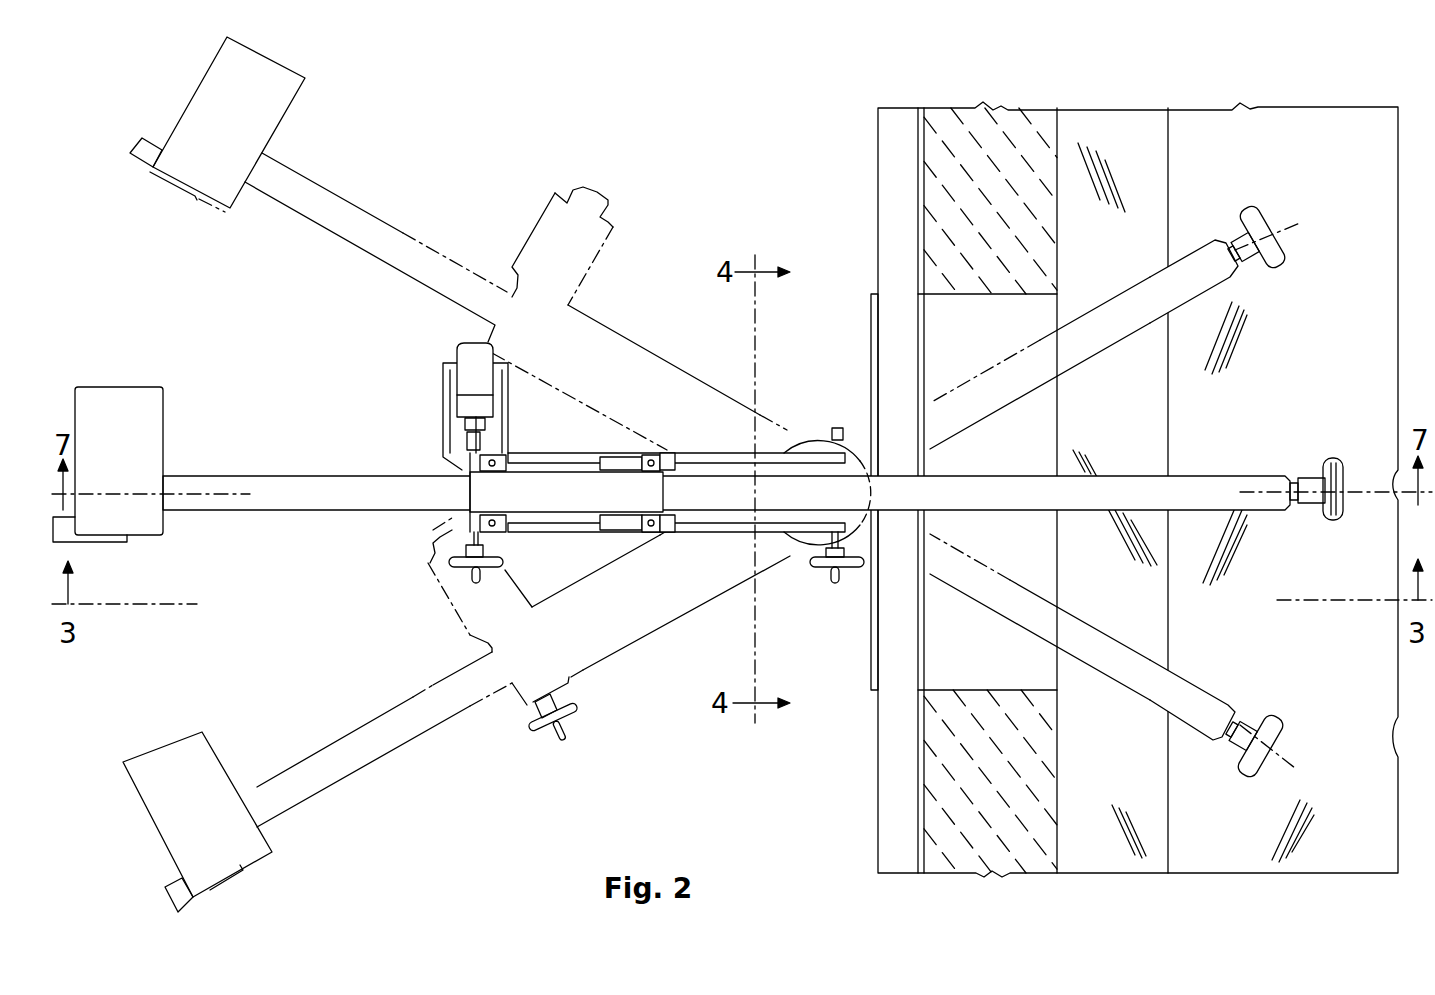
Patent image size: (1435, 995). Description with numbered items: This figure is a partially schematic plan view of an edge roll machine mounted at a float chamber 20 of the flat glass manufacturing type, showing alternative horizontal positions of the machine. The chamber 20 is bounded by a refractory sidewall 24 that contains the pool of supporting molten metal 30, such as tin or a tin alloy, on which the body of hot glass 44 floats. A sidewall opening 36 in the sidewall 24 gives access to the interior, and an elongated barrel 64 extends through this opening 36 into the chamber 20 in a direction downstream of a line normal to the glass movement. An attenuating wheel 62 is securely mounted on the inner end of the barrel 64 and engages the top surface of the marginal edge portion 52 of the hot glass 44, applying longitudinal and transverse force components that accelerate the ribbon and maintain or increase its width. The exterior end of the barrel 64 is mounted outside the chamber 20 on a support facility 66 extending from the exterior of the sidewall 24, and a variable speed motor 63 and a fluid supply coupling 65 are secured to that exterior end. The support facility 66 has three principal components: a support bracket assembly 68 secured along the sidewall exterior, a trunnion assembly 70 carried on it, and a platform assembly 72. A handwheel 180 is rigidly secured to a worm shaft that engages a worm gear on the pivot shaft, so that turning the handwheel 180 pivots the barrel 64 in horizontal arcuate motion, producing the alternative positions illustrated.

The float chamber 20 is at (863, 803).
The refractory sidewall 24 is at (928, 213).
The molten metal 30 is at (1092, 567).
The sidewall opening 36 is at (940, 342).
The body of hot glass 44 is at (1290, 339).
The marginal edge portion 52 is at (1166, 393).
The attenuating wheel 62 is at (1283, 238).
The variable speed motor 63 is at (297, 73).
The barrel 64 is at (1145, 279).
The fluid supply coupling 65 is at (135, 160).
The support facility 66 is at (693, 640).
The support bracket assembly 68 is at (862, 436).
The trunnion assembly 70 is at (791, 427).
The platform assembly 72 is at (590, 534).
The handwheel 180 is at (838, 583).